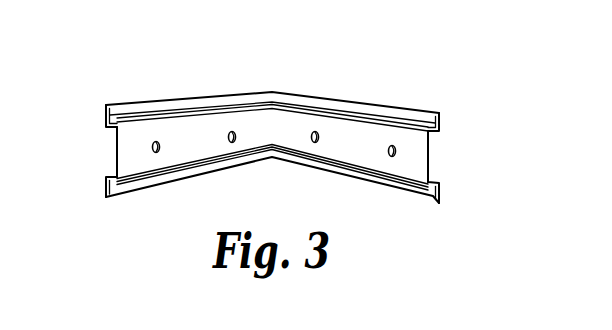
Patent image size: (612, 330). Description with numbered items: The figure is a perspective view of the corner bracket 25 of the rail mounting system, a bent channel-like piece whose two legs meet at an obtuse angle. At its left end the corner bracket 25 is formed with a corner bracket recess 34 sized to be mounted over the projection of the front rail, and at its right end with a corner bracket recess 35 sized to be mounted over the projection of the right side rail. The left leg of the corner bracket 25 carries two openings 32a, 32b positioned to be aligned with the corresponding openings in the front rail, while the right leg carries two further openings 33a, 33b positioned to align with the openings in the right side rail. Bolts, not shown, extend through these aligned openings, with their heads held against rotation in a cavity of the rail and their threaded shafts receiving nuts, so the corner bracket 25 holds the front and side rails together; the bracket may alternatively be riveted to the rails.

The corner bracket 25 is at (267, 112).
The opening 32a is at (157, 141).
The opening 32b is at (234, 132).
The opening 33a is at (393, 145).
The opening 33b is at (314, 131).
The corner bracket recess 34 is at (117, 152).
The corner bracket recess 35 is at (428, 150).